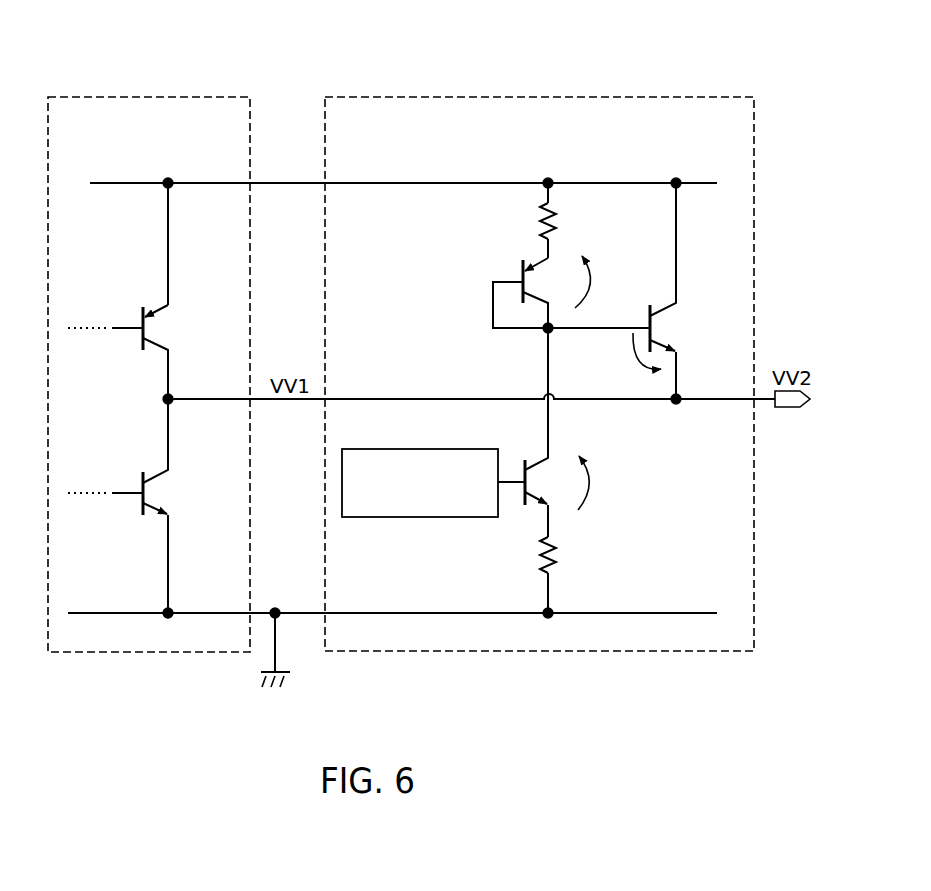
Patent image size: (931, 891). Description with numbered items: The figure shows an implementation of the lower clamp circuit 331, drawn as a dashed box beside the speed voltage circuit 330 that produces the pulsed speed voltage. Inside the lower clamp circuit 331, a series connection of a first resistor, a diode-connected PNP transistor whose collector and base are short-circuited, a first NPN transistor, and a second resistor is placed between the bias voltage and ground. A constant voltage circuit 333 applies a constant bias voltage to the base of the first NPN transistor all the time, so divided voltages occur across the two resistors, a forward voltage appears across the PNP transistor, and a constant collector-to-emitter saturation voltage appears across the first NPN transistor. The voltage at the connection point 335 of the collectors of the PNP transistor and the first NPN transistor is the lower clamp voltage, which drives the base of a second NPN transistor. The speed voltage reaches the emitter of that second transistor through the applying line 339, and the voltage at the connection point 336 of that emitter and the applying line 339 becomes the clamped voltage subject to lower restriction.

The speed voltage circuit 330 is at (168, 97).
The lower clamp circuit 331 is at (539, 343).
The constant voltage circuit 333 is at (443, 517).
The connection point 335 is at (545, 332).
The connection point 336 is at (679, 402).
The applying line 339 is at (280, 403).